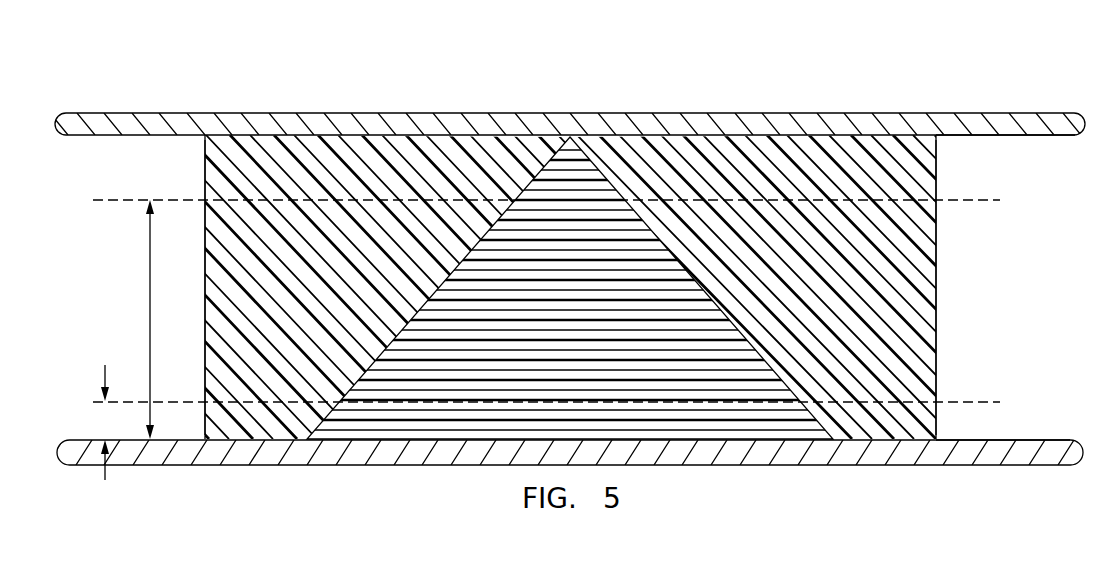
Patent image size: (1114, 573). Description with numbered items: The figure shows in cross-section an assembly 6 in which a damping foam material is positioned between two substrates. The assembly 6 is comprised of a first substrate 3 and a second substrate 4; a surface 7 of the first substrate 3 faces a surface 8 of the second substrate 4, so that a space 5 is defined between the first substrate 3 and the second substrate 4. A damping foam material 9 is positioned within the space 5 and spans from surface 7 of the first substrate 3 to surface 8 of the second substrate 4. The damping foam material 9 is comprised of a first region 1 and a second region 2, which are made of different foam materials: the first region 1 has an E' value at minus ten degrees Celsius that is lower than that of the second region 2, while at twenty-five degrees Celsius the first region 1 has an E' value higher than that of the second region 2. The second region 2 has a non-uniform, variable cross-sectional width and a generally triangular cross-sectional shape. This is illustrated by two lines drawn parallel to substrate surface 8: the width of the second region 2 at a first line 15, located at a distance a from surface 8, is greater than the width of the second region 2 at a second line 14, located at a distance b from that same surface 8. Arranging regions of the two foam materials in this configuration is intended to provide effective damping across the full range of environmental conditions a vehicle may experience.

The first region 1 is at (369, 155).
The second region 2 is at (580, 177).
The first substrate 3 is at (974, 112).
The second substrate 4 is at (997, 465).
The space 5 is at (115, 275).
The assembly 6 is at (256, 82).
The surface of the first substrate 7 is at (1035, 137).
The surface of the second substrate 8 is at (1027, 440).
The damping foam material 9 is at (947, 290).
The second line 14 is at (953, 199).
The first line 15 is at (953, 401).
The distance a is at (103, 365).
The distance b is at (150, 335).